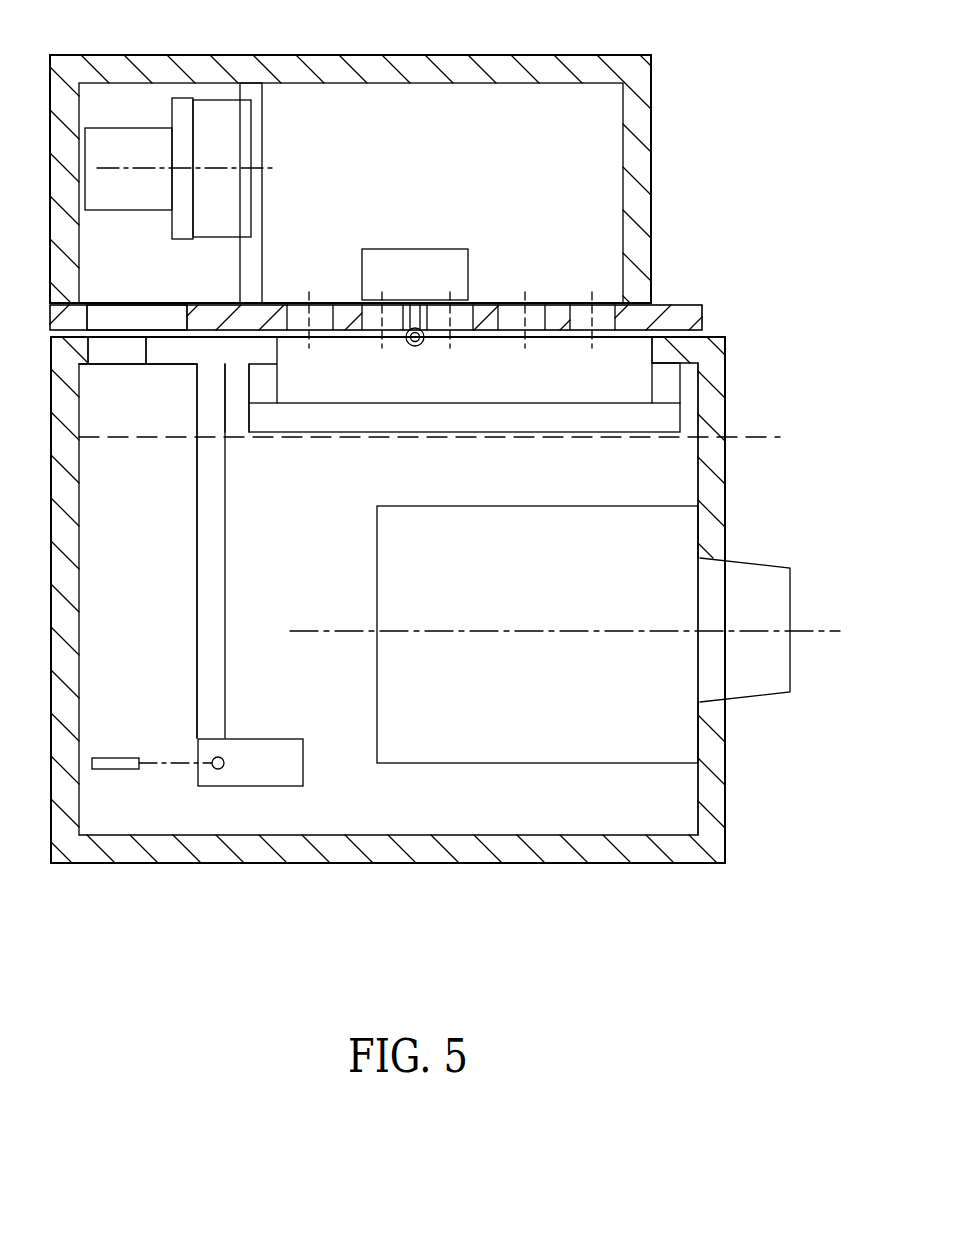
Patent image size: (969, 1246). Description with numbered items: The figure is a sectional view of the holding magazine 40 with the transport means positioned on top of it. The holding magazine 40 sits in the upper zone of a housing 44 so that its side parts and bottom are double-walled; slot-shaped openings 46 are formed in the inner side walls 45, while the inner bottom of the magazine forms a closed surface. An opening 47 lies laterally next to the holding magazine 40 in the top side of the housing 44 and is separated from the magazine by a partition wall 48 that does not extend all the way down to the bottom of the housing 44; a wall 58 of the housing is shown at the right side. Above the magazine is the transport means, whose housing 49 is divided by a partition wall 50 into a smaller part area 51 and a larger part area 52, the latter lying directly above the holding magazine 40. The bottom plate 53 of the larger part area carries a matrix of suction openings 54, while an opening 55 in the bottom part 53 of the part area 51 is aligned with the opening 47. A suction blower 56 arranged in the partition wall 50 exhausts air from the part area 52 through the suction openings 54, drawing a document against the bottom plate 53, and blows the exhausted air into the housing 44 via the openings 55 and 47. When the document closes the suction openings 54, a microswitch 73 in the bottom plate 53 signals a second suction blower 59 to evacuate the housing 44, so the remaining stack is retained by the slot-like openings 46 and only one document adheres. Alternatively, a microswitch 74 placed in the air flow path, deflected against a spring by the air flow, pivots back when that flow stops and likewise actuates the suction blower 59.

The holding magazine 40 is at (471, 381).
The housing 44 is at (285, 853).
The inner side walls 45 is at (242, 391).
The slot-shaped openings 46 is at (659, 388).
The opening 47 is at (117, 353).
The partition wall 48 is at (215, 593).
The housing 49 is at (485, 62).
The partition wall 50 is at (262, 257).
The part area 51 is at (112, 271).
The part area 52 is at (428, 187).
The bottom plate 53 is at (672, 310).
The suction openings 54 is at (587, 299).
The opening 55 is at (157, 318).
The suction blower 56 is at (238, 128).
The side wall 58 is at (720, 785).
The suction blower 59 is at (521, 596).
The microswitch 73 is at (415, 347).
The microswitch 74 is at (113, 757).